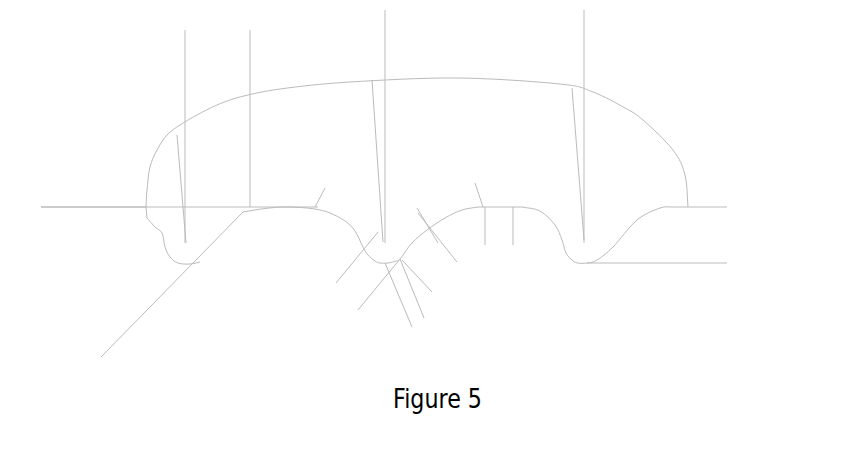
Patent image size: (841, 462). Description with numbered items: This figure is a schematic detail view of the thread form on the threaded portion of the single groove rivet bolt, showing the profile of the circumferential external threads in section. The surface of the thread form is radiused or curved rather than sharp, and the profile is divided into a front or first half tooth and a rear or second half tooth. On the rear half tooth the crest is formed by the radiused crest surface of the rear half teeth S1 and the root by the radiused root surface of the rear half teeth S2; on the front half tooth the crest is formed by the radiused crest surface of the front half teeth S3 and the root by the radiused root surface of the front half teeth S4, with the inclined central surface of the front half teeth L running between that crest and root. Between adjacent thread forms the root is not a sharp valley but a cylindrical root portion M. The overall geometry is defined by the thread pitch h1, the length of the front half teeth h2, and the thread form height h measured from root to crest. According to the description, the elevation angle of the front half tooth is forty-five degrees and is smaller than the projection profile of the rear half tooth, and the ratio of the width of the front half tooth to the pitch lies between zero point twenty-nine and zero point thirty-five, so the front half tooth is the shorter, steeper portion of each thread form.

The thread pitch h1 is at (584, 18).
The length of the front half teeth h2 is at (250, 41).
The thread form height h is at (722, 263).
The cylindrical root portion M is at (537, 238).
The inclined central surface of the front half teeth L is at (456, 261).
The radiused crest surface of the rear half teeth S1 is at (371, 294).
The radiused root surface of the rear half teeth S2 is at (377, 233).
The radiused crest surface of the front half teeth S3 is at (440, 304).
The radiused root surface of the front half teeth S4 is at (497, 188).